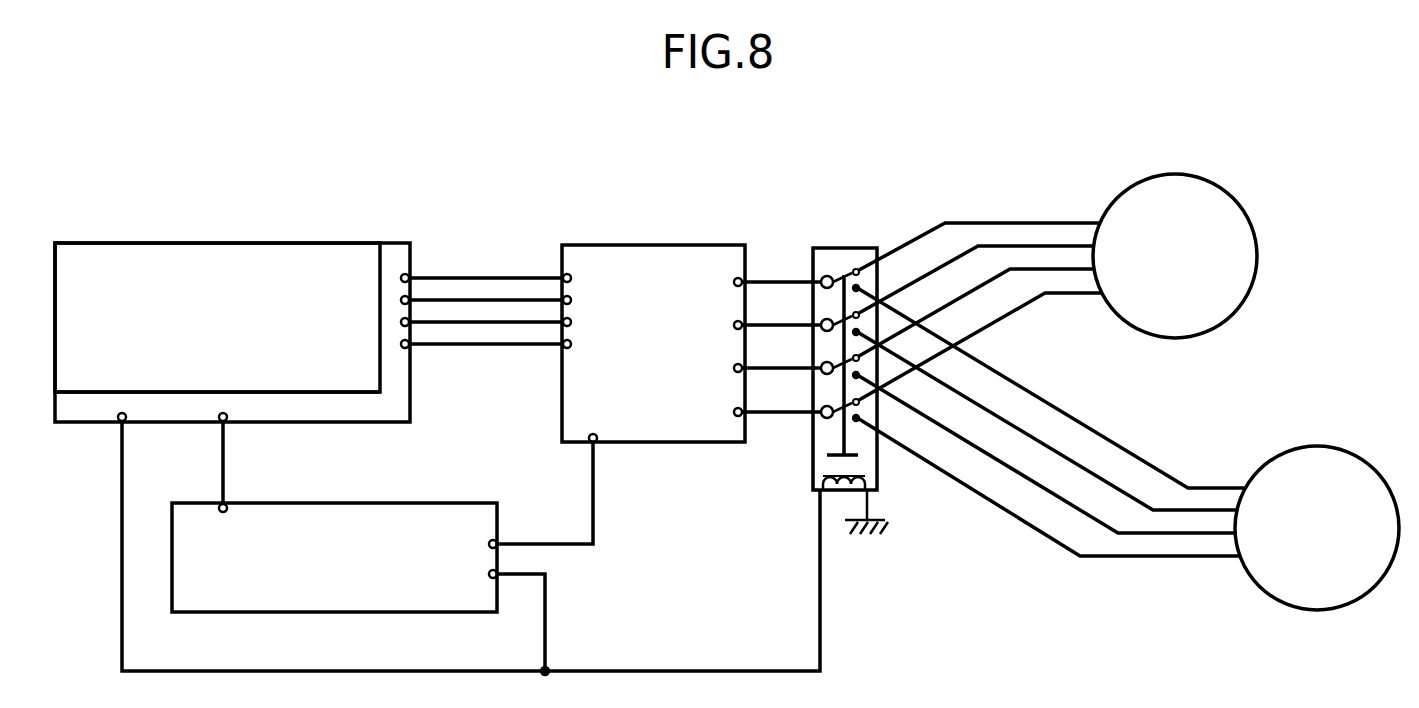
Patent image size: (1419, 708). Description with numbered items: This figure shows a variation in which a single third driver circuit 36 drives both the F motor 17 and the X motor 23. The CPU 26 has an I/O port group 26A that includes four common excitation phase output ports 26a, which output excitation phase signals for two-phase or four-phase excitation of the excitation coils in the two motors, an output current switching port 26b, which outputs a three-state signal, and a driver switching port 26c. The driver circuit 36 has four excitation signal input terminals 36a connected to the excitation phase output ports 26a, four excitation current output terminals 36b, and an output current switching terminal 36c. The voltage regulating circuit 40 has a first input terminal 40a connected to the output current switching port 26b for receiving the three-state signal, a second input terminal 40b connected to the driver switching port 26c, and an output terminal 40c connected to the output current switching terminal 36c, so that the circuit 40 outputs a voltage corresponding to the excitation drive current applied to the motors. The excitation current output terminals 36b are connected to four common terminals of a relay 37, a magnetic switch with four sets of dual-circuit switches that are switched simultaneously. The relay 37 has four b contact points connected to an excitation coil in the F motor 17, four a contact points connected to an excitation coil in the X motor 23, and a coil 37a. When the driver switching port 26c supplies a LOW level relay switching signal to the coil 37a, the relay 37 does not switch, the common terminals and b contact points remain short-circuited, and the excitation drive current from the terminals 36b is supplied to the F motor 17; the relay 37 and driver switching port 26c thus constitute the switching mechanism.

The F motor 17 is at (1173, 173).
The X motor 23 is at (1313, 446).
The CPU 26 is at (225, 243).
The I/O port group 26A is at (97, 390).
The common excitation phase output ports 26a is at (398, 265).
The output current switching port 26b is at (226, 414).
The driver switching port 26c is at (126, 414).
The third driver circuit 36 is at (650, 243).
The excitation signal input terminals 36a is at (575, 267).
The excitation current output terminals 36b is at (733, 270).
The output current switching terminal 36c is at (594, 434).
The relay 37 is at (845, 248).
The coil 37a is at (822, 478).
The voltage regulating circuit 40 is at (364, 503).
The first input terminal 40a is at (240, 506).
The second input terminal 40b is at (488, 582).
The output terminal 40c is at (496, 528).